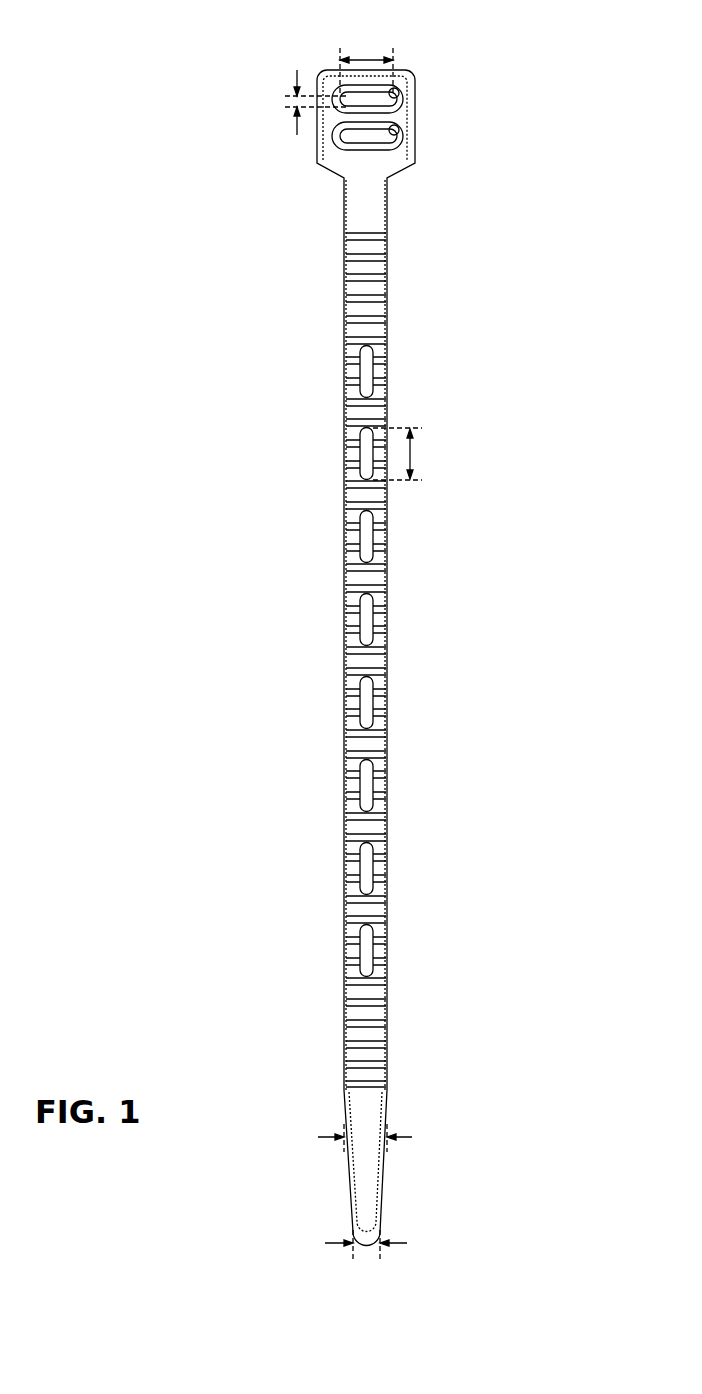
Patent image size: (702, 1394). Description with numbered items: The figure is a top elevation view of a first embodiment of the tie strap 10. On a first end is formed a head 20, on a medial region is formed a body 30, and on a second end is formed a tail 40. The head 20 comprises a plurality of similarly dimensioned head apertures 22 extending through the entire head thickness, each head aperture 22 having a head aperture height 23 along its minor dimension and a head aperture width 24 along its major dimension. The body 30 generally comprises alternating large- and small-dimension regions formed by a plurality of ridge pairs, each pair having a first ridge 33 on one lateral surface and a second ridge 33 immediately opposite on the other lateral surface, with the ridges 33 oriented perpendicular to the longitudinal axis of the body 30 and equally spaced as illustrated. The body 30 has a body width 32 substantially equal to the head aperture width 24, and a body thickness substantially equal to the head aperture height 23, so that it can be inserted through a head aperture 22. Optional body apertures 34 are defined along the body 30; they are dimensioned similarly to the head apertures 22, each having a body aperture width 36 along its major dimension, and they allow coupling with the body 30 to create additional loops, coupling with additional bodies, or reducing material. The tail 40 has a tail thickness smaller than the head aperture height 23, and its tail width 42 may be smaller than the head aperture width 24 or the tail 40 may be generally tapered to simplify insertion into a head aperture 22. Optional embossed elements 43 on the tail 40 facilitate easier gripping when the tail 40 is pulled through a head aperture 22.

The tie strap 10 is at (530, 283).
The head 20 is at (325, 101).
The head aperture 22 is at (384, 138).
The head aperture height 23 is at (296, 70).
The head aperture width 24 is at (365, 56).
The body 30 is at (327, 580).
The body width 32 is at (405, 1137).
The ridge 33 is at (387, 670).
The body aperture 34 is at (366, 538).
The body aperture width 36 is at (423, 434).
The tail 40 is at (333, 1154).
The tail width 42 is at (396, 1243).
The embossed element 43 is at (362, 1115).